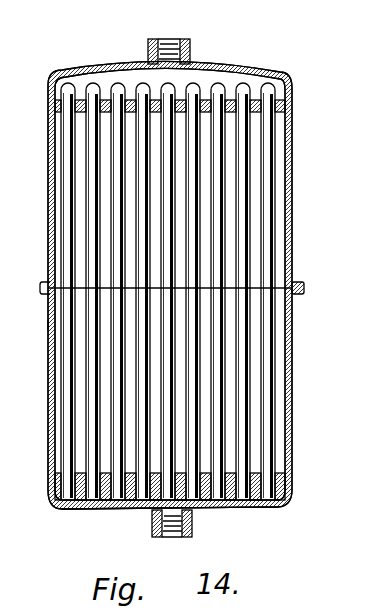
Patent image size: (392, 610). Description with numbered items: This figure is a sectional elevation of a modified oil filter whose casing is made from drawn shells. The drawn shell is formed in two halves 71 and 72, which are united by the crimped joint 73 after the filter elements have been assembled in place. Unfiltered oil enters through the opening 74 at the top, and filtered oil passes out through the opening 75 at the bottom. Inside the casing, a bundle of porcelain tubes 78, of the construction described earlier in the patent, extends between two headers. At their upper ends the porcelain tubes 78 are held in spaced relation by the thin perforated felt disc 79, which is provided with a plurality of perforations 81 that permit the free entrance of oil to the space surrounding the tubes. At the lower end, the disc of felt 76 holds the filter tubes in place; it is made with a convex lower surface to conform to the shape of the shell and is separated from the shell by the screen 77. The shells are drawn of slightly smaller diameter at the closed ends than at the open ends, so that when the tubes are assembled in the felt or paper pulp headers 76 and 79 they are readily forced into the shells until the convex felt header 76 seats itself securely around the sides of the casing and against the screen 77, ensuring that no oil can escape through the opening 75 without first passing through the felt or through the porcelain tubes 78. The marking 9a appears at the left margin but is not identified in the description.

The shell half 71 is at (294, 170).
The shell half 72 is at (294, 392).
The crimped joint 73 is at (302, 285).
The opening 74 is at (166, 42).
The opening 75 is at (178, 536).
The disc of felt 76 is at (262, 475).
The screen 77 is at (265, 503).
The porcelain tubes 78 is at (278, 337).
The thin perforated felt disc 79 is at (55, 107).
The perforations 81 is at (108, 100).
The partial numeral (cut off at margin) 9a is at (24, 325).